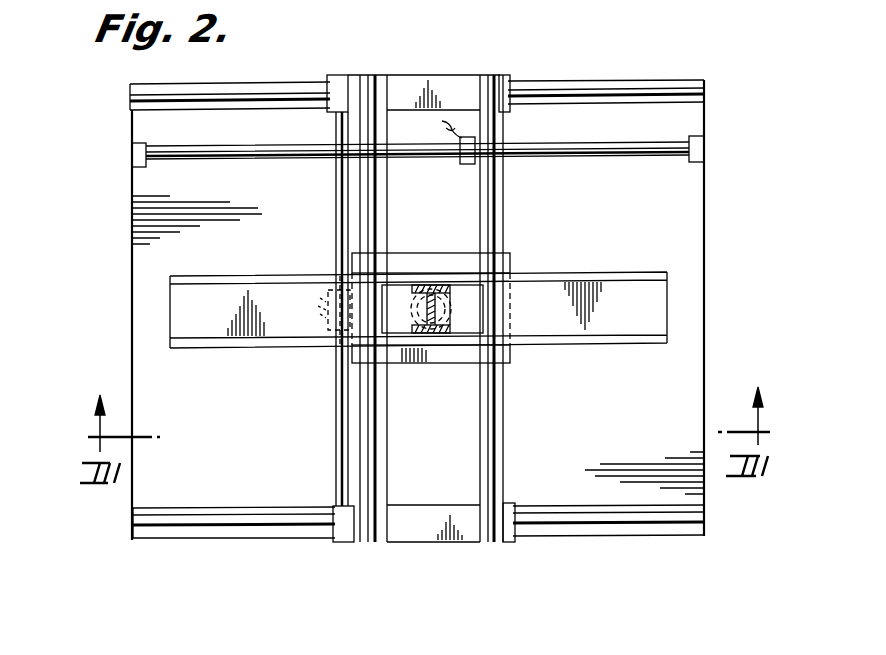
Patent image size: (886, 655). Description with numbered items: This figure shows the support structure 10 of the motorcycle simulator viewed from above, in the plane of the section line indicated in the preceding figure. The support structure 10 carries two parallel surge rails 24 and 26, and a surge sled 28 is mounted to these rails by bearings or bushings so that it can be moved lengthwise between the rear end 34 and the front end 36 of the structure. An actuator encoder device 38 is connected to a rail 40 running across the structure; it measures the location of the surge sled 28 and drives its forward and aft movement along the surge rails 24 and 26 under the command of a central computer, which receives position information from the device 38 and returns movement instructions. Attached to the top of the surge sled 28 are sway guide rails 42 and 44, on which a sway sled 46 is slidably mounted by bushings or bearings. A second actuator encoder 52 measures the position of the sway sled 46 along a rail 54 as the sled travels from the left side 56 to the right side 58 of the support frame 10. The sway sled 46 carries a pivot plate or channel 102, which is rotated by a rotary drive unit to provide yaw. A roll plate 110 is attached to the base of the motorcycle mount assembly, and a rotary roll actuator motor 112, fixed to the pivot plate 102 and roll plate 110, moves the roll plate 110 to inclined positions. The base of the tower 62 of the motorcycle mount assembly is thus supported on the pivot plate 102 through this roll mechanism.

The support structure 10 is at (566, 74).
The surge rail 24 is at (668, 85).
The surge rail 26 is at (670, 520).
The surge sled 28 is at (433, 518).
The rear end 34 is at (705, 230).
The front end 36 is at (132, 307).
The actuator encoder device 38 is at (465, 165).
The rail 40 is at (278, 155).
The sway guide rail 42 is at (496, 543).
The sway guide rail 44 is at (373, 545).
The sway sled 46 is at (512, 352).
The actuator encoder 52 is at (290, 260).
The rail 54 is at (340, 450).
The left side 56 is at (197, 537).
The right side 58 is at (290, 83).
The tower 62 is at (422, 285).
The pivot plate 102 is at (640, 308).
The roll plate 110 is at (483, 303).
The roll actuator motor 112 is at (458, 325).